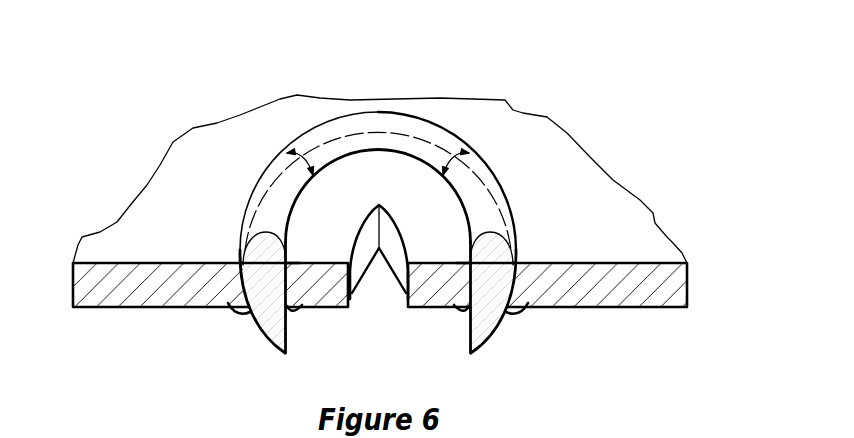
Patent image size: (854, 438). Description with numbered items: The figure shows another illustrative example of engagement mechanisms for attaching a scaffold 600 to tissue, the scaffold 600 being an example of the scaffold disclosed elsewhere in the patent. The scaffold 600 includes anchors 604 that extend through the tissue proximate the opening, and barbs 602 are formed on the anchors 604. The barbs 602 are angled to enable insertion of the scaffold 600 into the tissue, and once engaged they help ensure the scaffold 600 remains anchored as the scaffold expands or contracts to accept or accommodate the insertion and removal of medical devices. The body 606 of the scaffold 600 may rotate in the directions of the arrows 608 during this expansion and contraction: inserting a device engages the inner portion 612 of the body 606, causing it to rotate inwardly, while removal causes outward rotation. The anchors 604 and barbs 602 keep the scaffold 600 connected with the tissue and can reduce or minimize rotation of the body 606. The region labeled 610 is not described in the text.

The scaffold 600 is at (503, 142).
The barbs 602 is at (240, 314).
The anchors 604 is at (240, 283).
The body 606 is at (376, 130).
The arrows 608 is at (303, 157).
The leg shoulders 610 is at (243, 240).
The inner portion 612 is at (302, 199).